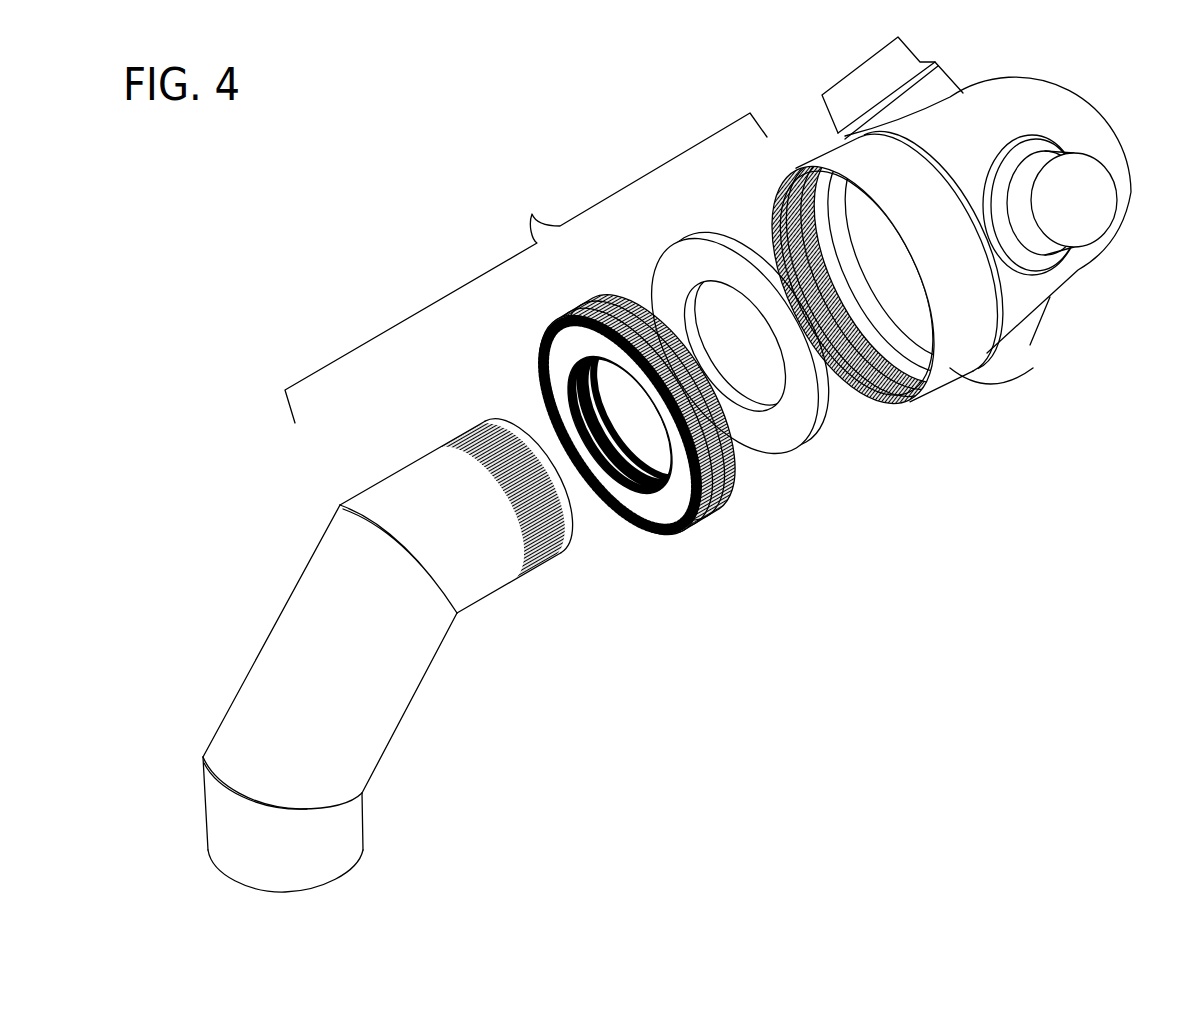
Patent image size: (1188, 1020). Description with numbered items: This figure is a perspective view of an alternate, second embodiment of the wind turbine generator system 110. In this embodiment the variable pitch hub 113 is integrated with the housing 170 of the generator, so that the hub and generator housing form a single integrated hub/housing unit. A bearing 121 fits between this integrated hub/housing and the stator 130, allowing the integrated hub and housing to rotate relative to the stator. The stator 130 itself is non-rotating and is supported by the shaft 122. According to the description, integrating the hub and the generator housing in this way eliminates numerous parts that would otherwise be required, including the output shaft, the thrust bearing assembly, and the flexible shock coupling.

The wind turbine generator system 110 is at (526, 268).
The variable pitch hub 113 is at (1066, 280).
The bearing 121 is at (822, 450).
The shaft 122 is at (489, 597).
The stator 130 is at (713, 517).
The housing 170 is at (938, 385).